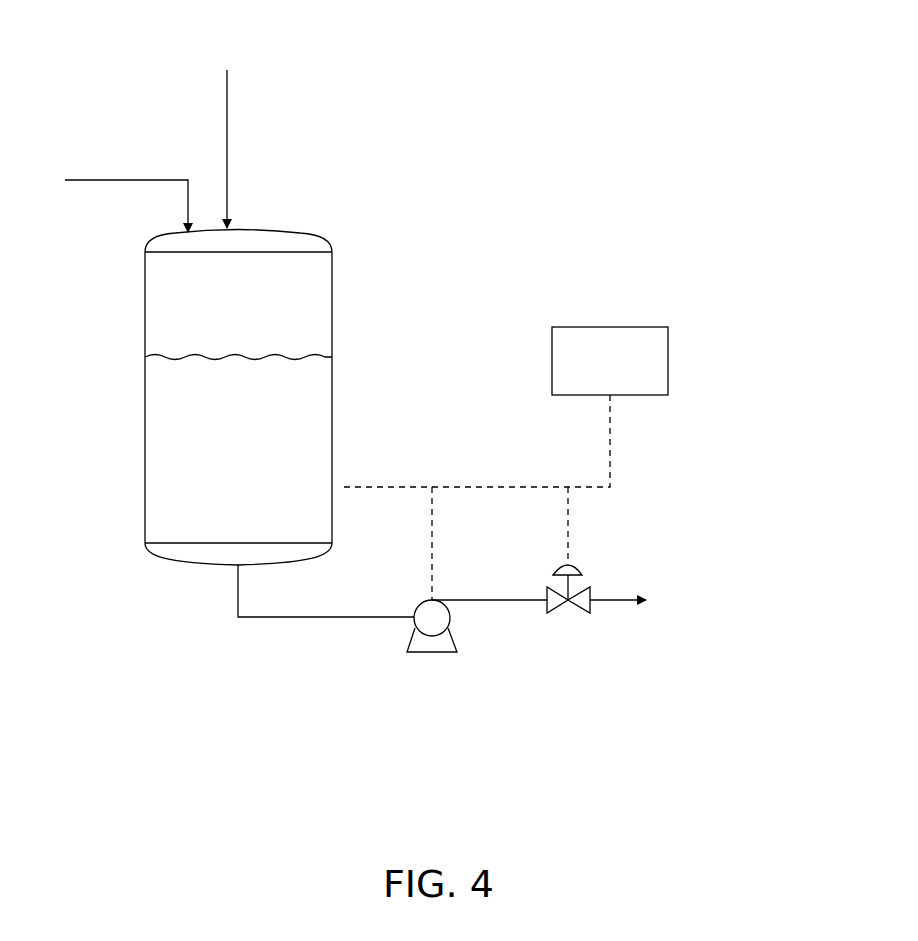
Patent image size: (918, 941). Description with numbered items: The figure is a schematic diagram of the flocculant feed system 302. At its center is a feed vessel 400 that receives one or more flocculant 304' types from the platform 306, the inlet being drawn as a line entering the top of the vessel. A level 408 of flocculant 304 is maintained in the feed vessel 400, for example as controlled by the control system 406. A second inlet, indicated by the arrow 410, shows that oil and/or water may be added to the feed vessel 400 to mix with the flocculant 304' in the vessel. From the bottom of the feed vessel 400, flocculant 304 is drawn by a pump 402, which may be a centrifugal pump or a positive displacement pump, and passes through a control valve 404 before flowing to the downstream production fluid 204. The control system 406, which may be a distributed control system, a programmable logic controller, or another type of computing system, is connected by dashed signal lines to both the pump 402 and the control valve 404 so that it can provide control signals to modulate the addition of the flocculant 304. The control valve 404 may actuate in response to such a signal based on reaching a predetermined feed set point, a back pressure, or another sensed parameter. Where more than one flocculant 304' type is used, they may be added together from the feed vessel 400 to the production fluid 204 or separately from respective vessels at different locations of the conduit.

The feed vessel 400 is at (143, 302).
The level 408 is at (248, 355).
The arrow 410 is at (123, 180).
The flocculant 304' is at (272, 153).
The platform 306 is at (256, 46).
The flocculant 304 is at (425, 618).
The pump 402 is at (432, 653).
The control valve 404 is at (560, 560).
The control system 406 is at (610, 327).
The production fluid 204 is at (711, 603).
The flocculant feed system 302 is at (453, 851).